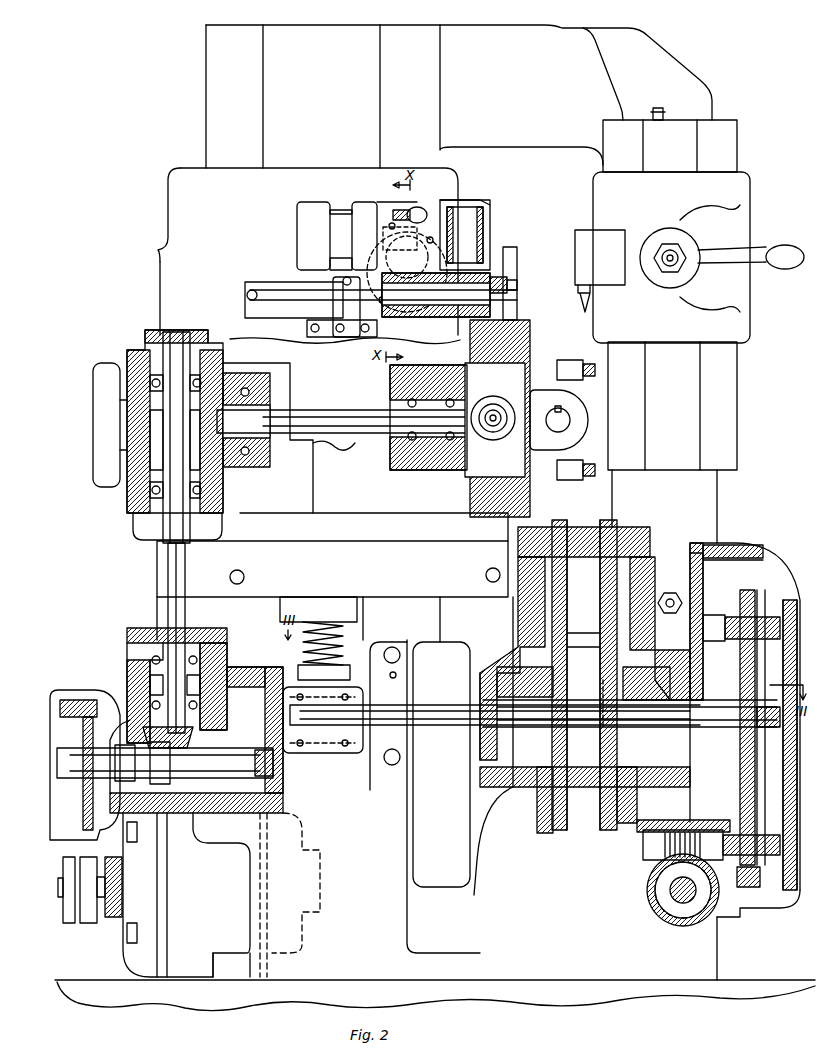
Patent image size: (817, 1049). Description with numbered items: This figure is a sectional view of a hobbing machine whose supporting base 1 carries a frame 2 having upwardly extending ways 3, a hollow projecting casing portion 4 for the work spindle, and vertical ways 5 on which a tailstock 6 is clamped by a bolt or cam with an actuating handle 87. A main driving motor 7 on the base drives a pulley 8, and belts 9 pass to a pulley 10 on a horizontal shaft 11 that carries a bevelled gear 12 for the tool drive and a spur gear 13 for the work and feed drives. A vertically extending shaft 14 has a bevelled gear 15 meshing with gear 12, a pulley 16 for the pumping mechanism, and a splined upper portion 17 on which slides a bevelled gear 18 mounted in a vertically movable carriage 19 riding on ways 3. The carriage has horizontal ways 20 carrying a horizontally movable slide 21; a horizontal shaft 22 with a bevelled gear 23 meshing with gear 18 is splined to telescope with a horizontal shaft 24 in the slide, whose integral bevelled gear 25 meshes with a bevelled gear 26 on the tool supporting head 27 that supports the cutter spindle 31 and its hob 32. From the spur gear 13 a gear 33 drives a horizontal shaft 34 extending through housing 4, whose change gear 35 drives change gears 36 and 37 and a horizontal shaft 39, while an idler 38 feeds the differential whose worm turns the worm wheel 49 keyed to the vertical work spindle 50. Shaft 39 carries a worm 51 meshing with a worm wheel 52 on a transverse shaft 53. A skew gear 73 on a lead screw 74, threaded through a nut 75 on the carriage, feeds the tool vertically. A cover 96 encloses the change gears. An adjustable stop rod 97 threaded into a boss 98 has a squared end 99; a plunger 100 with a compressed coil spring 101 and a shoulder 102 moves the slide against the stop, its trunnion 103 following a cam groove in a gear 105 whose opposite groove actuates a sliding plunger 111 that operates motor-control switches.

The supporting base 1 is at (170, 1000).
The frame 2 is at (505, 27).
The upwardly extending ways 3 is at (380, 66).
The hollow projecting casing portion 4 is at (481, 792).
The vertical ways 5 is at (700, 417).
The tailstock 6 is at (742, 326).
The main driving motor 7 is at (128, 917).
The pulley 8 is at (63, 910).
The belts 9 is at (90, 924).
The pulley 10 is at (60, 708).
The horizontal shaft 11 is at (58, 755).
The bevelled gear 12 is at (200, 768).
The spur gear 13 is at (229, 813).
The vertically extending shaft 14 is at (168, 582).
The bevelled gear 15 is at (150, 728).
The pulley 16 is at (127, 634).
The splined portion 17 is at (172, 335).
The bevelled gear 18 is at (127, 488).
The vertically movable carriage 19 is at (166, 211).
The horizontal ways 20 is at (160, 270).
The horizontally movable slide 21 is at (320, 533).
The horizontal shaft 22 is at (335, 436).
The bevelled gear 23 is at (243, 480).
The horizontal shaft 24 is at (345, 458).
The bevelled gear 25 is at (492, 352).
The bevelled gear 26 is at (496, 405).
The tool supporting head 27 is at (500, 330).
The cutter spindle 31 is at (566, 412).
The hob 32 is at (575, 430).
The gear 33 is at (225, 686).
The horizontal shaft 34 is at (375, 724).
The change gear 35 is at (760, 681).
The change gear 36 is at (757, 776).
The change gear 37 is at (758, 885).
The idler 38 is at (760, 606).
The horizontal shaft 39 is at (760, 825).
The worm wheel 49 is at (658, 660).
The work spindle 50 is at (625, 528).
The worm 51 is at (645, 816).
The worm wheel 52 is at (652, 893).
The shaft 53 is at (670, 888).
The skew gear 73 is at (363, 700).
The lead screw 74 is at (343, 646).
The nut 75 is at (357, 610).
The actuating handle 87 is at (773, 248).
The cover 96 is at (748, 912).
The rod 97 is at (505, 282).
The threaded boss 98 is at (495, 275).
The squared end 99 is at (517, 300).
The plunger 100 is at (428, 318).
The compressed coil spring 101 is at (437, 198).
The shoulder 102 is at (357, 236).
The projecting lug or trunnion 103 is at (382, 307).
The gear 105 is at (385, 262).
The sliding plunger 111 is at (300, 322).